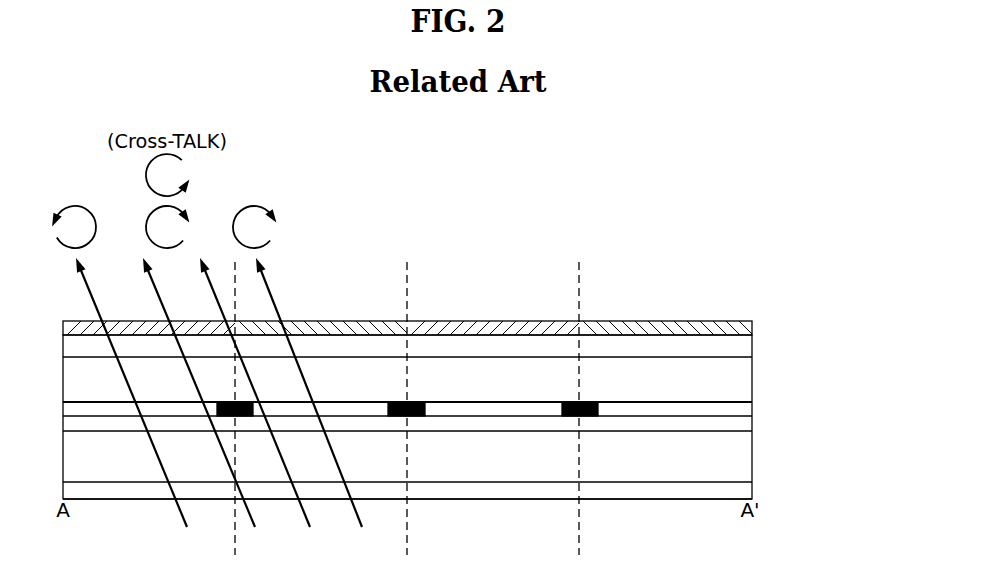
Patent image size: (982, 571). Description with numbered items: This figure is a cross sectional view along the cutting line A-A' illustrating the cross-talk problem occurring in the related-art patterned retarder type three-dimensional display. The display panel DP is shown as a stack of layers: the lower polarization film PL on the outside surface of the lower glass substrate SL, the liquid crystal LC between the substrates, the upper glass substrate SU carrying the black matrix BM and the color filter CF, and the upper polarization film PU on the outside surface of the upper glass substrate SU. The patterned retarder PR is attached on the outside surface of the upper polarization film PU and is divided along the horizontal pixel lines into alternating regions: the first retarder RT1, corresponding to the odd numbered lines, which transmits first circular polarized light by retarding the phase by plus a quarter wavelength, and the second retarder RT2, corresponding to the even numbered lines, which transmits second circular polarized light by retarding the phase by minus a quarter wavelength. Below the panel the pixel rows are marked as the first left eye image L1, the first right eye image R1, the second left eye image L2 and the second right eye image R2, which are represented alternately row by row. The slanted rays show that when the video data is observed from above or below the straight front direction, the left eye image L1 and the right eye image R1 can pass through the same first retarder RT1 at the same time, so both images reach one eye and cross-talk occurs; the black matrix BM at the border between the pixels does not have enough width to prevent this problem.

The patterned retarder PR is at (442, 299).
The first retarder RT1 is at (115, 330).
The second retarder RT2 is at (330, 330).
The display panel DP is at (467, 419).
The upper polarization film PU is at (752, 343).
The upper glass substrate SU is at (752, 368).
The black matrix BM is at (594, 402).
The color filter CF is at (752, 409).
The liquid crystal LC is at (752, 424).
The lower glass substrate SL is at (752, 457).
The lower polarization film PL is at (442, 491).
The left eye image L1 is at (119, 369).
The right eye image R1 is at (297, 369).
The second left eye image L2 is at (455, 409).
The second right eye image R2 is at (628, 409).